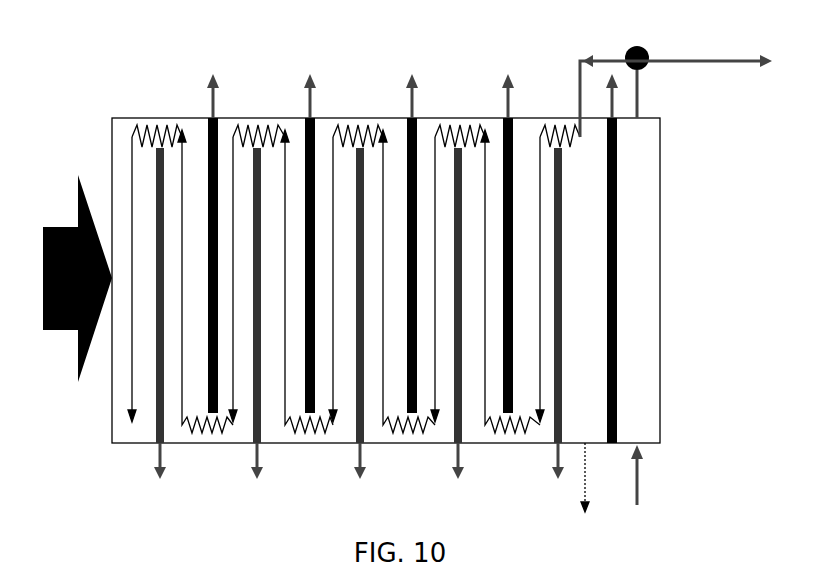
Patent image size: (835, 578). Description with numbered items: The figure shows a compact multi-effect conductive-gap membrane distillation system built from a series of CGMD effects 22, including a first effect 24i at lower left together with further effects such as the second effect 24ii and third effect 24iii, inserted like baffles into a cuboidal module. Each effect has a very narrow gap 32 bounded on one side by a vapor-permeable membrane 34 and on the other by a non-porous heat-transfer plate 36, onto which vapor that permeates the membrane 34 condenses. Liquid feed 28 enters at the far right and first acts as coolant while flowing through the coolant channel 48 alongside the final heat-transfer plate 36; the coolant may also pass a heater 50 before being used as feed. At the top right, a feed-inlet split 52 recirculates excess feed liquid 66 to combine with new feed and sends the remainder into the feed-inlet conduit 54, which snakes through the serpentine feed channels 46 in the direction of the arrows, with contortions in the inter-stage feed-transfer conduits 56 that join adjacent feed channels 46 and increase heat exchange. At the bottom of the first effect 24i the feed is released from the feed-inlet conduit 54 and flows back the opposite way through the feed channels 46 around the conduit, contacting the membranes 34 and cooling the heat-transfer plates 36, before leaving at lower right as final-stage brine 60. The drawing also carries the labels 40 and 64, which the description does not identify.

The CGMD effect 22 is at (162, 118).
The first effect 24i is at (131, 446).
The second effect 24ii is at (182, 445).
The third effect 24iii is at (239, 445).
The liquid feed 28 is at (125, 353).
The gap 32 is at (512, 230).
The vapor-permeable membrane 34 is at (262, 216).
The heat-transfer plate 36 is at (312, 237).
The cell stack 40 is at (457, 452).
The feed channel 46 is at (125, 202).
The coolant channel 48 is at (626, 265).
The heater 50 is at (77, 278).
The feed-inlet split 52 is at (623, 45).
The feed-inlet conduit 54 is at (461, 125).
The inter-stage feed-transfer conduit 56 is at (556, 126).
The final-stage brine 60 is at (583, 480).
The flow path 64 is at (137, 425).
The excess feed liquid 66 is at (701, 60).